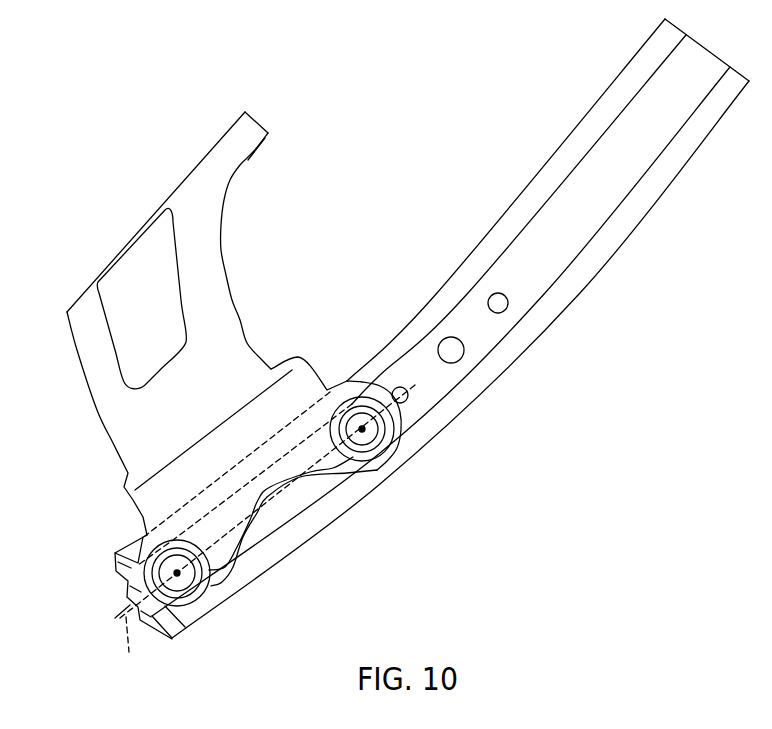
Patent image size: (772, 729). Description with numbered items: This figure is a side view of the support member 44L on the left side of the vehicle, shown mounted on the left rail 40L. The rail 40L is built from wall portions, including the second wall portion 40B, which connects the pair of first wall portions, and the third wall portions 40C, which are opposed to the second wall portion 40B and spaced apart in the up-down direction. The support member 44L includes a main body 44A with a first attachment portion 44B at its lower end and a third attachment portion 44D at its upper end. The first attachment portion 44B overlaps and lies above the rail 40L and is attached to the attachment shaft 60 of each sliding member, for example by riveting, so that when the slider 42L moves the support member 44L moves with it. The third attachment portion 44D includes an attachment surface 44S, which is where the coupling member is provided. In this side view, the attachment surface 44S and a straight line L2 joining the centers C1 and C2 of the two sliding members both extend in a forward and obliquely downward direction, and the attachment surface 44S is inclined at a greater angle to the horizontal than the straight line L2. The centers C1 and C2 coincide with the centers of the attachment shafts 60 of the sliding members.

The rail 40L is at (528, 183).
The second wall portion 40B is at (570, 238).
The third wall portion 40C is at (455, 288).
The third attachment portion 44D is at (266, 124).
The attachment surface 44S is at (167, 197).
The support member 44L is at (232, 223).
The main body 44A is at (210, 266).
The first attachment portion 44B is at (260, 483).
The attachment shaft 60 is at (384, 440).
The center of sliding member C1 is at (178, 575).
The center of sliding member C2 is at (363, 431).
The slider 42L is at (105, 560).
The straight line L2 is at (134, 645).